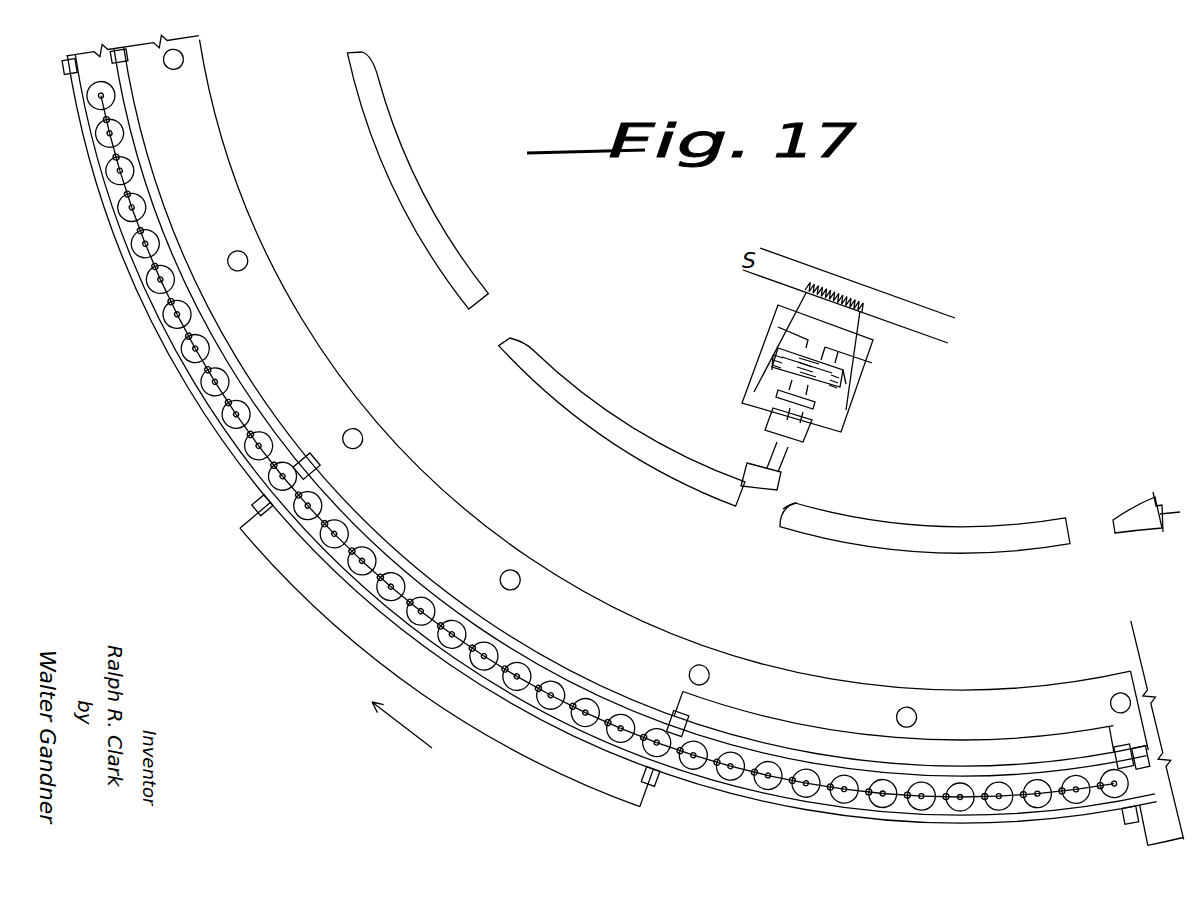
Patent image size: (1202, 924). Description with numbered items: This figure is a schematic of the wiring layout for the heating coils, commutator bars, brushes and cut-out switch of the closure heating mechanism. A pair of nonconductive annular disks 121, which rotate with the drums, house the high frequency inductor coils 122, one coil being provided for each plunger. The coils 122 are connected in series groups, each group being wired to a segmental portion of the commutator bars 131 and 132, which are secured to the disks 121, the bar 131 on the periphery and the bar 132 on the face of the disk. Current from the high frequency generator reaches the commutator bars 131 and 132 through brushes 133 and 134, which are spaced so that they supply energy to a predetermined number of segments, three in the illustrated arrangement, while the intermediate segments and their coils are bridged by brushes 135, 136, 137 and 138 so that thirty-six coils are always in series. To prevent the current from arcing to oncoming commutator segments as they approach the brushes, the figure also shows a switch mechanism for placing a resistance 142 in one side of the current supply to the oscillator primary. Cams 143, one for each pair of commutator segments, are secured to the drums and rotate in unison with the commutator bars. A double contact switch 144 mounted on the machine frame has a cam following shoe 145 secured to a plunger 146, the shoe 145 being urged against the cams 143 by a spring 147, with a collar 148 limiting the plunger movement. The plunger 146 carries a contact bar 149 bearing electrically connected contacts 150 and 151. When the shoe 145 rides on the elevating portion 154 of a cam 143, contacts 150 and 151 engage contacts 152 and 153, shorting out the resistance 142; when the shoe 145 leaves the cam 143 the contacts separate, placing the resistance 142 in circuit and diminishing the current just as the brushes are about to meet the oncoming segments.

The annular disk 121 is at (590, 608).
The inductor coil 122 is at (808, 780).
The commutator bar 131 is at (940, 770).
The commutator bar 132 is at (960, 820).
The brush 133 is at (318, 468).
The brush 134 is at (1128, 823).
The brush 135 is at (252, 505).
The brush 136 is at (653, 788).
The brush 137 is at (670, 712).
The brush 138 is at (1118, 753).
The resistance 142 is at (855, 300).
The cam 143 is at (925, 528).
The double contact switch 144 is at (836, 434).
The cam following shoe 145 is at (781, 477).
The plunger 146 is at (792, 386).
The spring 147 is at (774, 366).
The collar 148 is at (770, 410).
The contact bar 149 is at (845, 404).
The contact 150 is at (775, 350).
The contact 151 is at (838, 386).
The contact 152 is at (772, 330).
The contact 153 is at (840, 375).
The elevating portion 154 is at (803, 509).